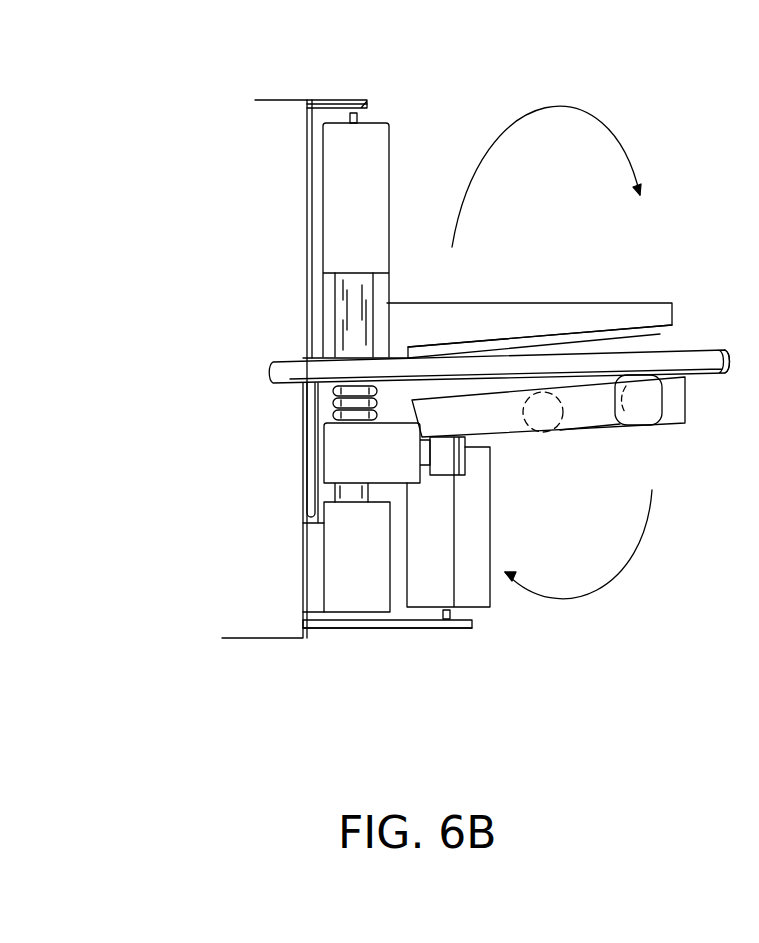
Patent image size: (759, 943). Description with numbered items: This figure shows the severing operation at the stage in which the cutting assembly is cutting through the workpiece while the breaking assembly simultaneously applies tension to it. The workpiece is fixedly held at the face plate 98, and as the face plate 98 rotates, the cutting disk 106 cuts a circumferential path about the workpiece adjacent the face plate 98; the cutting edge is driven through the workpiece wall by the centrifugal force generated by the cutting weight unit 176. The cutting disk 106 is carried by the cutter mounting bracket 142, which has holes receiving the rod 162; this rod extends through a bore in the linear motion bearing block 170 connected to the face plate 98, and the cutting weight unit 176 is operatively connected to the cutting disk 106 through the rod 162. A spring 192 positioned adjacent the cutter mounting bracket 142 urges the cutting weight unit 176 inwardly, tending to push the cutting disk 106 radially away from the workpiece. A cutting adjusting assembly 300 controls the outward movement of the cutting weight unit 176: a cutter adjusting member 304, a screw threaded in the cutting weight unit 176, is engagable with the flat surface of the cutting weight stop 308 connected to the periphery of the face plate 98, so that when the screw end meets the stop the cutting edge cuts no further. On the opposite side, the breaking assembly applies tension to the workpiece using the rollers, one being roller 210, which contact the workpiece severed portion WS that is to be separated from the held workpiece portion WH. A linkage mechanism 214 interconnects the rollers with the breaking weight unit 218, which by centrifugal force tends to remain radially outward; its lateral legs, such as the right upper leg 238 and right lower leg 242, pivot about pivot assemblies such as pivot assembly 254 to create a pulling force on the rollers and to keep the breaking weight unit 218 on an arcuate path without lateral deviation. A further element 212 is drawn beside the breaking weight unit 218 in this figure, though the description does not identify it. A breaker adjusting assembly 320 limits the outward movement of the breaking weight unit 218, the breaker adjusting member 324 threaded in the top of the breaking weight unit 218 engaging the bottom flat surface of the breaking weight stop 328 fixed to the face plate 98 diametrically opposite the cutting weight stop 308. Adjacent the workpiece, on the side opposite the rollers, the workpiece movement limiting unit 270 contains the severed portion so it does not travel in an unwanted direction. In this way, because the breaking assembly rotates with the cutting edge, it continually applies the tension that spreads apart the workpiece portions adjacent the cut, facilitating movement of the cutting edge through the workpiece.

The face plate 98 is at (298, 100).
The breaker adjusting assembly 320 is at (345, 91).
The breaking weight stop 328 is at (367, 102).
The breaker adjusting member 324 is at (358, 116).
The cutting weight unit 176 is at (335, 222).
The second rod 162 is at (347, 320).
The workpiece movement limiting unit 270 is at (587, 310).
The right lower leg 242 is at (508, 345).
The held workpiece portion WH is at (298, 382).
The workpiece severed portion WS is at (718, 372).
The spring 192 is at (330, 413).
The cutter mounting bracket 142 is at (333, 470).
The cutting disk 106 is at (302, 507).
The linear motion bearing block 170 is at (333, 592).
The cutting weight stop 308 is at (382, 632).
The cutting adjusting assembly 300 is at (447, 640).
The cutter adjusting member 304 is at (450, 613).
The stop block 212 is at (447, 488).
The breaking weight unit 218 is at (473, 530).
The right upper leg 238 is at (513, 435).
The pivot assembly 254 is at (568, 395).
The roller 210 is at (640, 428).
The linkage mechanism 214 is at (587, 445).